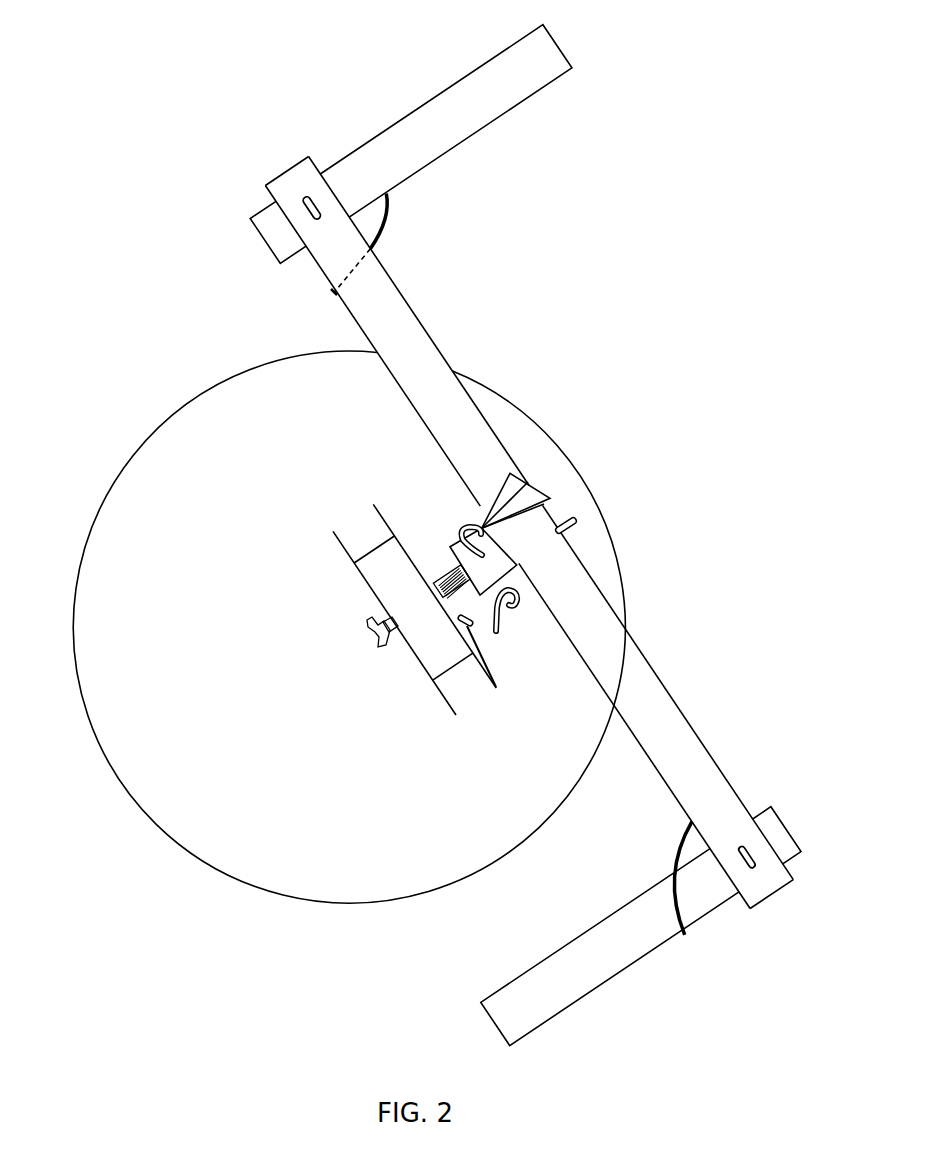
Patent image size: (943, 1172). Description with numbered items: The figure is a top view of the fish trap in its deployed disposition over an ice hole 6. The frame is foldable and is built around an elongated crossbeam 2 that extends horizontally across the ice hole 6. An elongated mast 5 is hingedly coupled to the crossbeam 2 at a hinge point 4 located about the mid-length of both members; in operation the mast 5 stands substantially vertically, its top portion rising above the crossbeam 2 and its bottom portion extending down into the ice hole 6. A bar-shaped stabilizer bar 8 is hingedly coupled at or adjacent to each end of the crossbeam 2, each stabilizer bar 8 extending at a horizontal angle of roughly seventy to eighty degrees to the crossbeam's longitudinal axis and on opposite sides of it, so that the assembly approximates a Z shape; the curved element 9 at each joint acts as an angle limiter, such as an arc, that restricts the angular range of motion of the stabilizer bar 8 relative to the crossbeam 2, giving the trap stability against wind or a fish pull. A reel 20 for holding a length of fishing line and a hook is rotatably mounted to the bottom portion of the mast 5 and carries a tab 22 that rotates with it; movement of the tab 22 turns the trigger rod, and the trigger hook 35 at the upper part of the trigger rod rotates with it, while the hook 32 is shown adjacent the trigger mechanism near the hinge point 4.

The crossbeam 2 is at (433, 341).
The hinge point 4 is at (574, 521).
The mast 5 is at (452, 547).
The ice hole 6 is at (153, 432).
The stabilizer bar 8 is at (476, 98).
The curved brace 9 is at (387, 220).
The reel 20 is at (414, 655).
The tab 22 is at (470, 627).
The hook 32 is at (505, 627).
The trigger hook 35 is at (522, 588).